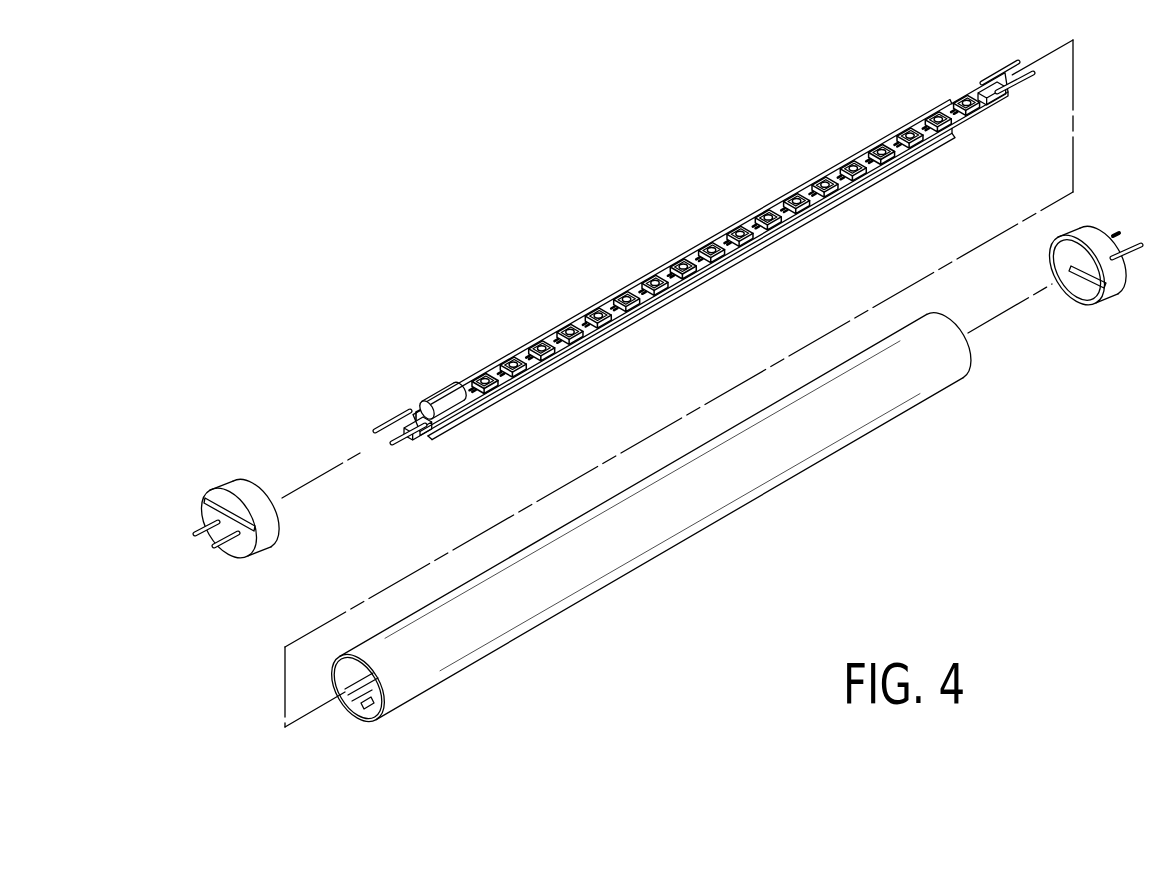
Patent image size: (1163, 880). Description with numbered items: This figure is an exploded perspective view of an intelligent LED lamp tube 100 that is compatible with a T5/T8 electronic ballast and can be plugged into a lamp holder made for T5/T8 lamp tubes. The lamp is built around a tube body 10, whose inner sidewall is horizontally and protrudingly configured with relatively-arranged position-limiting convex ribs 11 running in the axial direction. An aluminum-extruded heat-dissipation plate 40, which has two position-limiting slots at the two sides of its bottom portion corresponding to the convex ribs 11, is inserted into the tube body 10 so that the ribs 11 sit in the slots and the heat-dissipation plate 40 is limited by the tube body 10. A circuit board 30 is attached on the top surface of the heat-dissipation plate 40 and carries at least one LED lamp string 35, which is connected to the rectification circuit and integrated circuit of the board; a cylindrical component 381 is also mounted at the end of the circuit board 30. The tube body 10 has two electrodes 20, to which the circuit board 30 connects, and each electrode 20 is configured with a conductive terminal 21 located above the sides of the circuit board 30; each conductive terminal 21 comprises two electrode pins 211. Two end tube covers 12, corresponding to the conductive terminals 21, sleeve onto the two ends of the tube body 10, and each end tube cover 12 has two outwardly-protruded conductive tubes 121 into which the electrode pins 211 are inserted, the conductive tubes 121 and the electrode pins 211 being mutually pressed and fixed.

The intelligent LED lamp tube 100 is at (708, 173).
The tube body 10 is at (967, 366).
The position-limiting convex ribs 11 is at (366, 712).
The end tube cover 12 is at (244, 488).
The conductive tube 121 is at (205, 522).
The electrode 20 is at (391, 418).
The conductive terminal 21 is at (427, 410).
The electrode pin 211 is at (377, 428).
The circuit board 30 is at (663, 269).
The LED lamp string 35 is at (614, 294).
The capacitor 381 is at (452, 394).
The heat-dissipation plate 40 is at (545, 381).